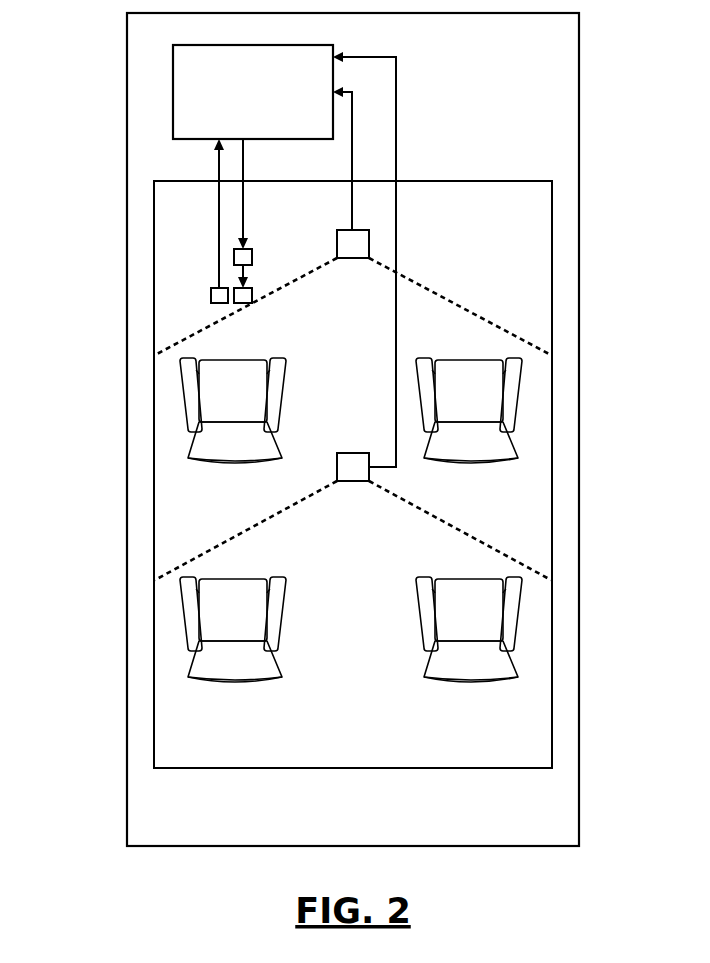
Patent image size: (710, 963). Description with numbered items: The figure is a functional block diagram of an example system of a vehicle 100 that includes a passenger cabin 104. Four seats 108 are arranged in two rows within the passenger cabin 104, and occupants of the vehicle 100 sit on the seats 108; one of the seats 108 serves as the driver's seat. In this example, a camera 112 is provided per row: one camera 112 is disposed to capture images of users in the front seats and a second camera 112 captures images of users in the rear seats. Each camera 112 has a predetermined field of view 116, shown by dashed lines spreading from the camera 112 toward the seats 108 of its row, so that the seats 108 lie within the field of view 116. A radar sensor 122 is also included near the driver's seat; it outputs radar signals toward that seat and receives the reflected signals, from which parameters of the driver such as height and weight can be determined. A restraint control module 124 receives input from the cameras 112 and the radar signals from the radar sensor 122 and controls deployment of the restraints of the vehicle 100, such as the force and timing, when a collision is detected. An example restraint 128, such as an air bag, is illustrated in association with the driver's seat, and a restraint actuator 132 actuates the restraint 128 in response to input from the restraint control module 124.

The vehicle 100 is at (579, 165).
The passenger cabin 104 is at (552, 330).
The seats 108 is at (195, 445).
The camera 112 is at (337, 232).
The field of view 116 is at (309, 276).
The radar sensor 122 is at (211, 290).
The restraint control module 124 is at (289, 140).
The restraint 128 is at (252, 290).
The restraint actuator 132 is at (252, 250).